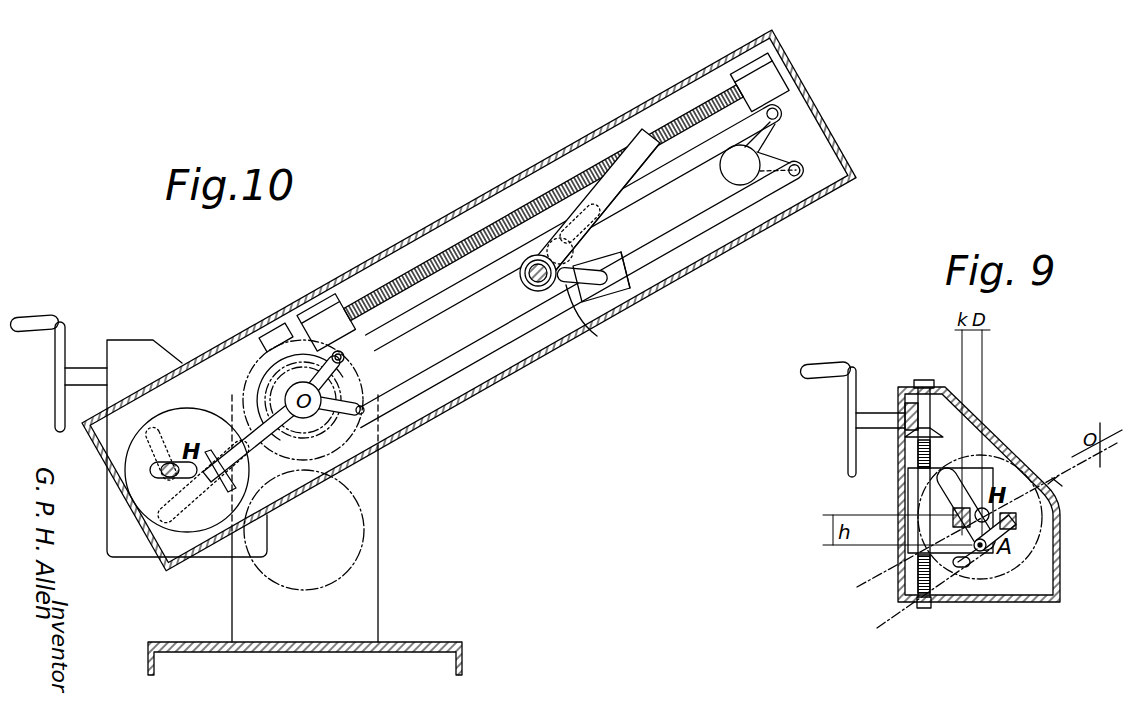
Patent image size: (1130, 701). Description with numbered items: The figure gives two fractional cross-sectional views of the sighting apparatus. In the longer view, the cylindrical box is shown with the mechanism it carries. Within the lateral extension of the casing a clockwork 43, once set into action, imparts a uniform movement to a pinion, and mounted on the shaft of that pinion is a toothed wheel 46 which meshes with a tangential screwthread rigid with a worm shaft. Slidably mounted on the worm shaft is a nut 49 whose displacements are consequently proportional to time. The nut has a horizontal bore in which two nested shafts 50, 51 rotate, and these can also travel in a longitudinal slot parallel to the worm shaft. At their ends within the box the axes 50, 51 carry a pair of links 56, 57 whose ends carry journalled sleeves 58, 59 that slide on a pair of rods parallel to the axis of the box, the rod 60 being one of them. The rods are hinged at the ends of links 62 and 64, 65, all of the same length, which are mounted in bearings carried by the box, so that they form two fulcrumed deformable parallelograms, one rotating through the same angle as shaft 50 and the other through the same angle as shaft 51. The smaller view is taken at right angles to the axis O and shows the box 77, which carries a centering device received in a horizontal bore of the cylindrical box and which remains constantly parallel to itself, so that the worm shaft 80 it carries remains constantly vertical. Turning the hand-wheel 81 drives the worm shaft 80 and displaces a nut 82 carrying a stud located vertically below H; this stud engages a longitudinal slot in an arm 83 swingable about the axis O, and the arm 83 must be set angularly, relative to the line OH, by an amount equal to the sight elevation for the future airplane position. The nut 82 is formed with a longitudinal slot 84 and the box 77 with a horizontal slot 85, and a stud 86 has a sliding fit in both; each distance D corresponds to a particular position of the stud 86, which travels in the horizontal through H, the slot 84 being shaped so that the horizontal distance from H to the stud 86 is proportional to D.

In FIG. 10, the clockwork 43 is at (365, 520).
In FIG. 10, the toothed wheel 46 is at (255, 381).
In FIG. 10, the nut 49 is at (610, 173).
In FIG. 10, the nested shaft 50 is at (595, 321).
In FIG. 10, the nested shaft 51 is at (526, 283).
In FIG. 10, the link 56 is at (582, 263).
In FIG. 10, the link 57 is at (625, 284).
In FIG. 10, the journalled sleeve 58 is at (603, 218).
In FIG. 10, the journalled sleeve 59 is at (648, 288).
In FIG. 10, the rod 60 is at (623, 197).
In FIG. 10, the link 62 is at (790, 160).
In FIG. 10, the link 64 is at (346, 357).
In FIG. 10, the link 65 is at (362, 405).
In FIG. 10, the arm 83 is at (248, 420).
In FIG. 9, the arm 83 is at (955, 567).
In FIG. 9, the box 77 is at (905, 594).
In FIG. 9, the worm shaft 80 is at (923, 397).
In FIG. 9, the hand-wheel 81 is at (852, 402).
In FIG. 9, the nut 82 is at (913, 548).
In FIG. 9, the longitudinal slot 84 is at (943, 480).
In FIG. 9, the horizontal slot 85 is at (945, 523).
In FIG. 9, the stud 86 is at (953, 517).